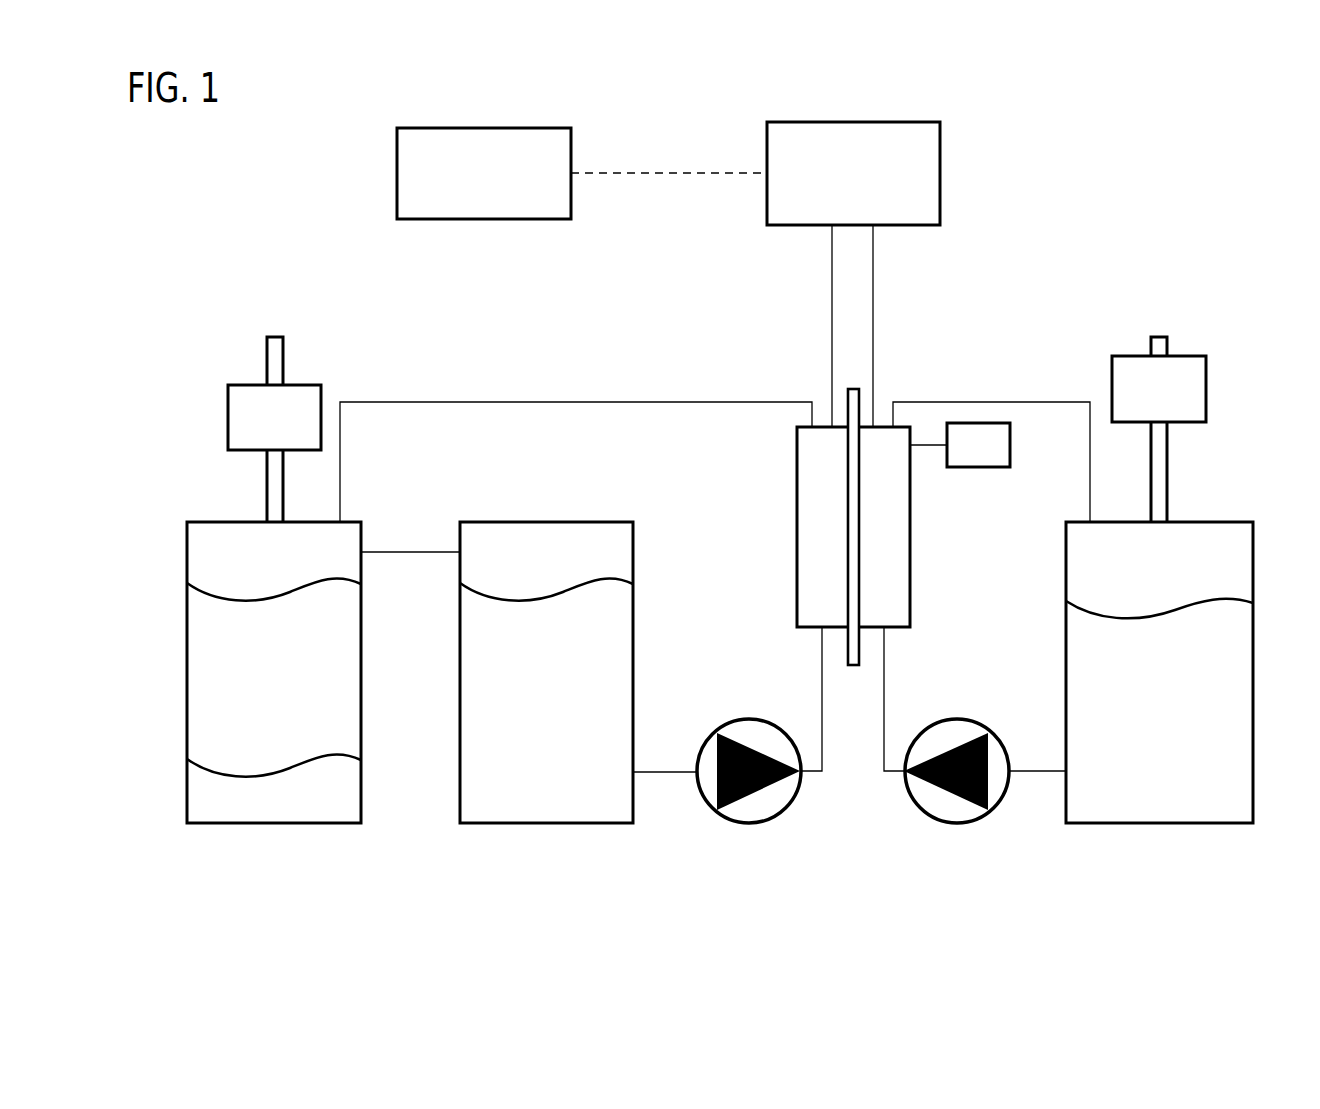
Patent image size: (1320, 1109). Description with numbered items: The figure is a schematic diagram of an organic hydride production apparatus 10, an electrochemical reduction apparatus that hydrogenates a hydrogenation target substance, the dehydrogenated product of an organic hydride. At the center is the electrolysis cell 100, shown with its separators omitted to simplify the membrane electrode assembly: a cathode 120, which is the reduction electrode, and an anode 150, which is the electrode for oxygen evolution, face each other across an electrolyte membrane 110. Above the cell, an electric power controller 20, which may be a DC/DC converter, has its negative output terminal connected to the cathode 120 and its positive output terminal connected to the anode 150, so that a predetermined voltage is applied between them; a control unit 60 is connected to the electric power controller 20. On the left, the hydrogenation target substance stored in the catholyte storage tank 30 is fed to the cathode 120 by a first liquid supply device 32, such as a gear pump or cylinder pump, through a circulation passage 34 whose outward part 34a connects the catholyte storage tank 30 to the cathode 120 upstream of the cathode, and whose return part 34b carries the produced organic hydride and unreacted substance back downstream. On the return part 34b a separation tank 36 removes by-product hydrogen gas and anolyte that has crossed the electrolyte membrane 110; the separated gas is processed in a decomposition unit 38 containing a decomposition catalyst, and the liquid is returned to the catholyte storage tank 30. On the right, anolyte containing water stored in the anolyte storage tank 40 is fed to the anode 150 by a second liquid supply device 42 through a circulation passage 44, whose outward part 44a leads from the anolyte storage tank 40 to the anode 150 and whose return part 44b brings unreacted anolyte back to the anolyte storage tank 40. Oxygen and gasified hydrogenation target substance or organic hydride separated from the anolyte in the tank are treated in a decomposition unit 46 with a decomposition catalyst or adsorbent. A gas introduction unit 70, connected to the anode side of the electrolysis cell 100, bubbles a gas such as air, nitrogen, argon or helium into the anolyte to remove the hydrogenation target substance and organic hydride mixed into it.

The organic hydride production apparatus 10 is at (735, 983).
The electric power controller 20 is at (883, 122).
The catholyte storage tank 30 is at (553, 823).
The first liquid supply device 32 is at (748, 823).
The circulation passage 34 is at (589, 603).
The outward part 34a is at (822, 757).
The return part 34b is at (683, 402).
The separation tank 36 is at (275, 823).
The decomposition unit 38 is at (228, 410).
The anolyte storage tank 40 is at (1163, 823).
The second liquid supply device 42 is at (958, 823).
The circulation passage 44 is at (977, 603).
The outward part 44a is at (884, 757).
The return part 44b is at (1008, 402).
The decomposition unit 46 is at (1206, 385).
The control unit 60 is at (497, 127).
The gas introduction unit 70 is at (1010, 452).
The electrolysis cell 100 is at (926, 445).
The electrolyte membrane 110 is at (855, 569).
The cathode 120 is at (830, 534).
The anode 150 is at (988, 505).